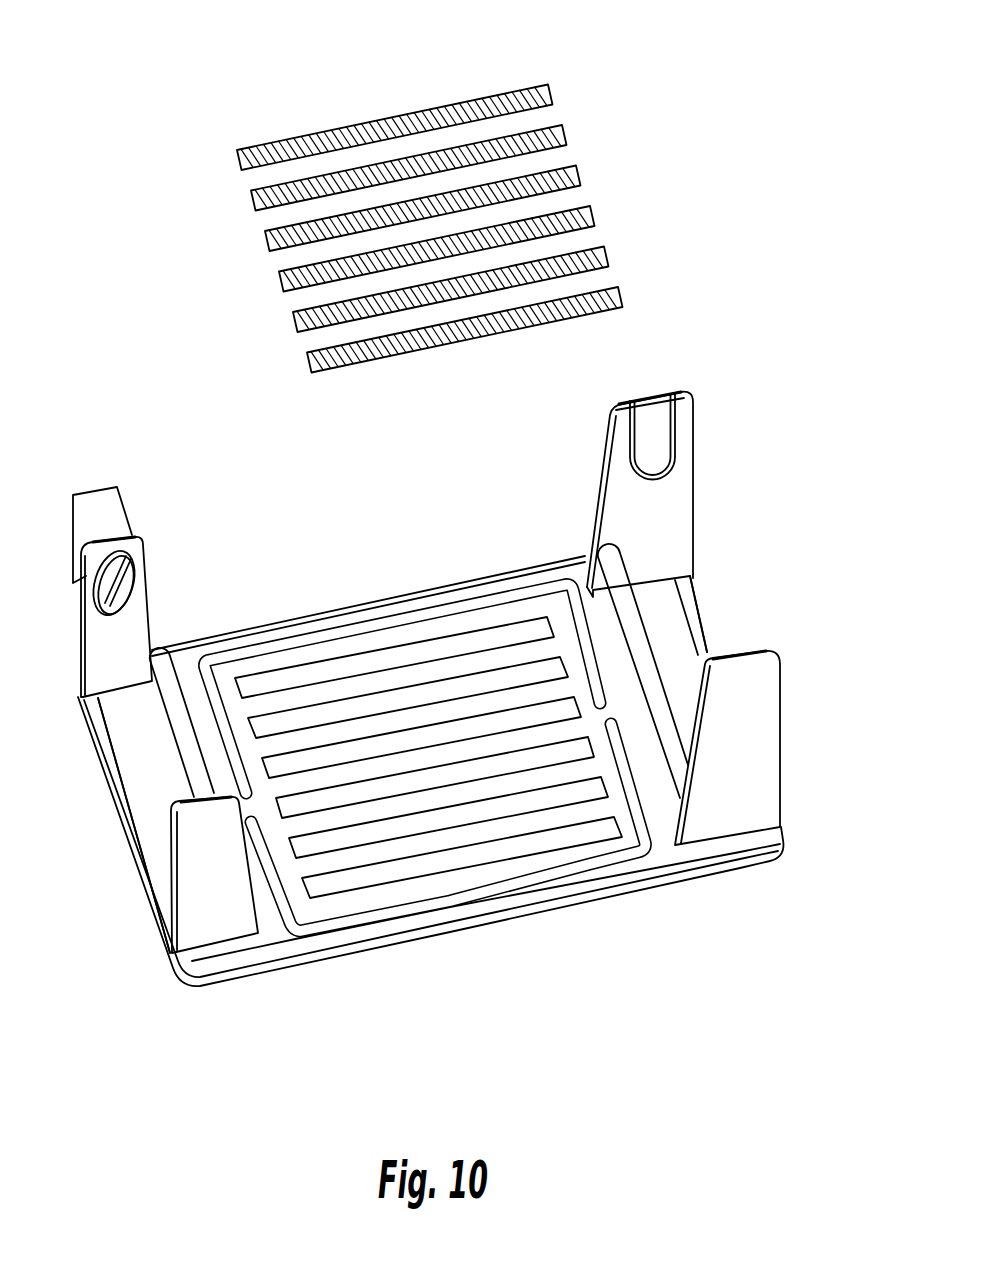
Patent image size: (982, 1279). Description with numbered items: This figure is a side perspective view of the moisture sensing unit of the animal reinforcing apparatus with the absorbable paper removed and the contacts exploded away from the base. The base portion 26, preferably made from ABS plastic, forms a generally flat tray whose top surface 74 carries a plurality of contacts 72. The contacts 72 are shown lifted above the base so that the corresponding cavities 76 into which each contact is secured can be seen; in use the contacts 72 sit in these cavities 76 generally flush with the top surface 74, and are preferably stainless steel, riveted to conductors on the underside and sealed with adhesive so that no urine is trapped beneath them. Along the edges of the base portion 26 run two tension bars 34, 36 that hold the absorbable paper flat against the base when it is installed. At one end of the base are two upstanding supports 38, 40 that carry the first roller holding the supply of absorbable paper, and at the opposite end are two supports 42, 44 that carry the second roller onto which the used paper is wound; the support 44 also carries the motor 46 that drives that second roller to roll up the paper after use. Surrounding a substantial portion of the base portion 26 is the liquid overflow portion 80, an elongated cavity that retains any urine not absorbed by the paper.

The base portion 26 is at (703, 627).
The tension bar 34 is at (177, 742).
The tension bar 36 is at (647, 717).
The support 38 is at (178, 885).
The support 40 is at (82, 643).
The support 42 is at (765, 735).
The support 44 is at (650, 397).
The motor 46 is at (91, 490).
The contacts 72 is at (326, 132).
The top surface 74 is at (688, 587).
The cavity 76 is at (443, 867).
The liquid overflow portion 80 is at (180, 667).